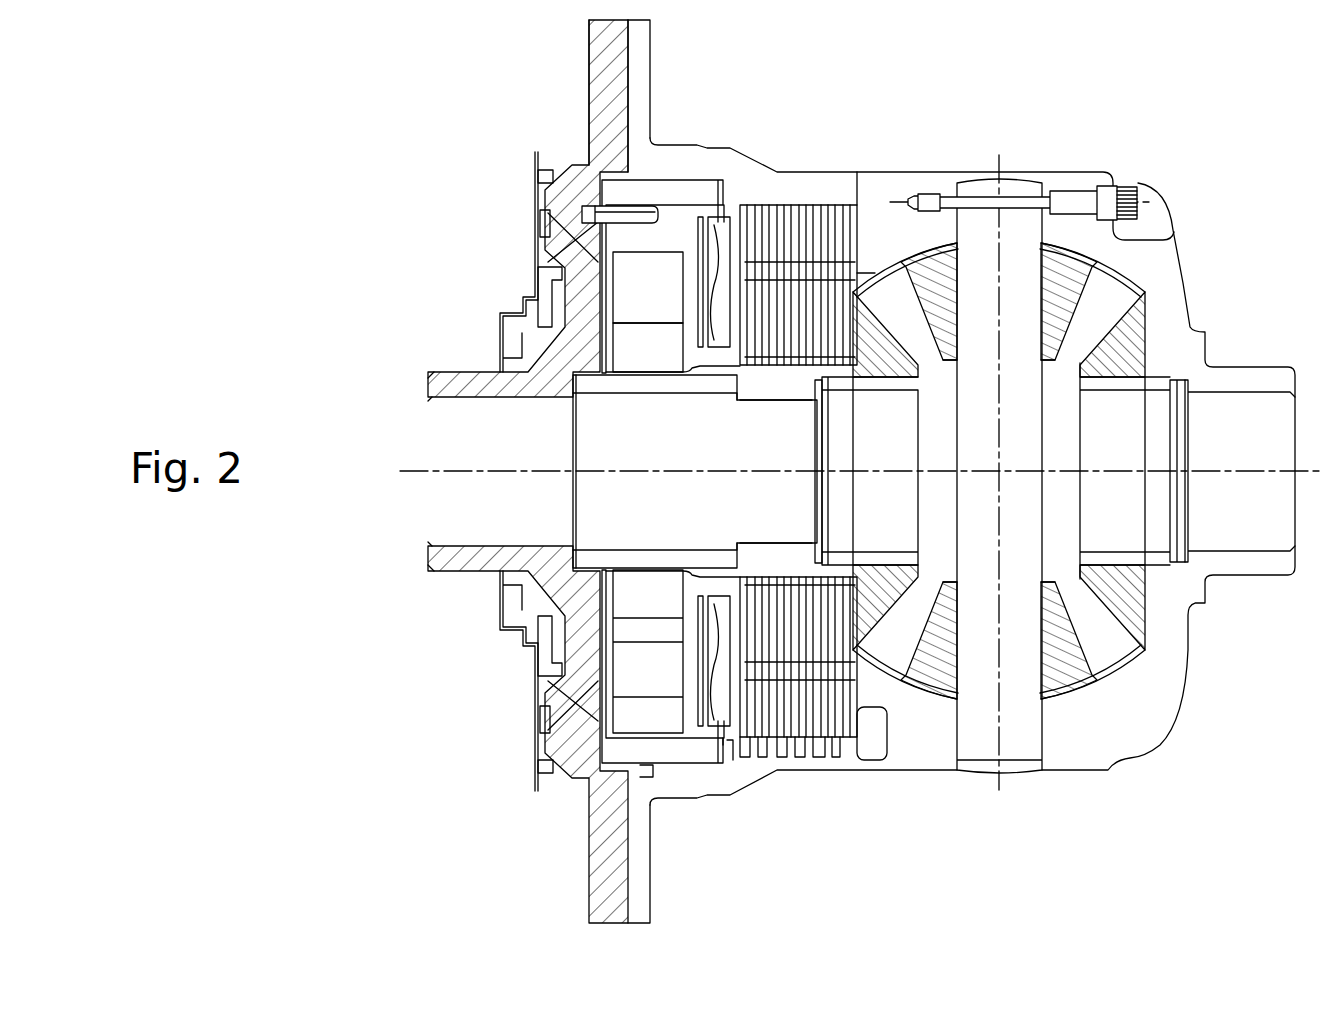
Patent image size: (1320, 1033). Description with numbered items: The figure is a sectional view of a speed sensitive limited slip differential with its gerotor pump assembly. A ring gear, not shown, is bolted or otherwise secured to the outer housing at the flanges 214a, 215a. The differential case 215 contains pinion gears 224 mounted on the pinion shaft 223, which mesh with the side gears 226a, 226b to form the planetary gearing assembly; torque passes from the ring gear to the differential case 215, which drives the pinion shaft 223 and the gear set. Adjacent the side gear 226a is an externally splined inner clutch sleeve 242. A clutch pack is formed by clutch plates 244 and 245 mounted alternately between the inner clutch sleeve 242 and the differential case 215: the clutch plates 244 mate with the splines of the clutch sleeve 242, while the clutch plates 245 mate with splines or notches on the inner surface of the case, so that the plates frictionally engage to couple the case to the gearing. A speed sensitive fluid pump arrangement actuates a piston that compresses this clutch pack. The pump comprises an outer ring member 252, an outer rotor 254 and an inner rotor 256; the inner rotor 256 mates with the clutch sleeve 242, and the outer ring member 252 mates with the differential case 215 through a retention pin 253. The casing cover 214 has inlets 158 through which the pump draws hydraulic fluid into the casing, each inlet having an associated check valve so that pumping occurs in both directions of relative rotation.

The inlets 158 is at (568, 263).
The casing cover 214 is at (432, 379).
The flange 214a is at (595, 72).
The differential case 215 is at (1173, 186).
The flange 215a is at (640, 72).
The pinion shaft 223 is at (1025, 435).
The pinion gears 224 is at (1068, 270).
The side gear 226a is at (888, 565).
The side gear 226b is at (1133, 605).
The inner clutch sleeve 242 is at (645, 383).
The clutch plates 244 is at (845, 205).
The clutch plates 245 is at (840, 757).
The outer ring member 252 is at (708, 206).
The retention pin 253 is at (590, 210).
The outer rotor 254 is at (665, 301).
The inner rotor 256 is at (665, 357).